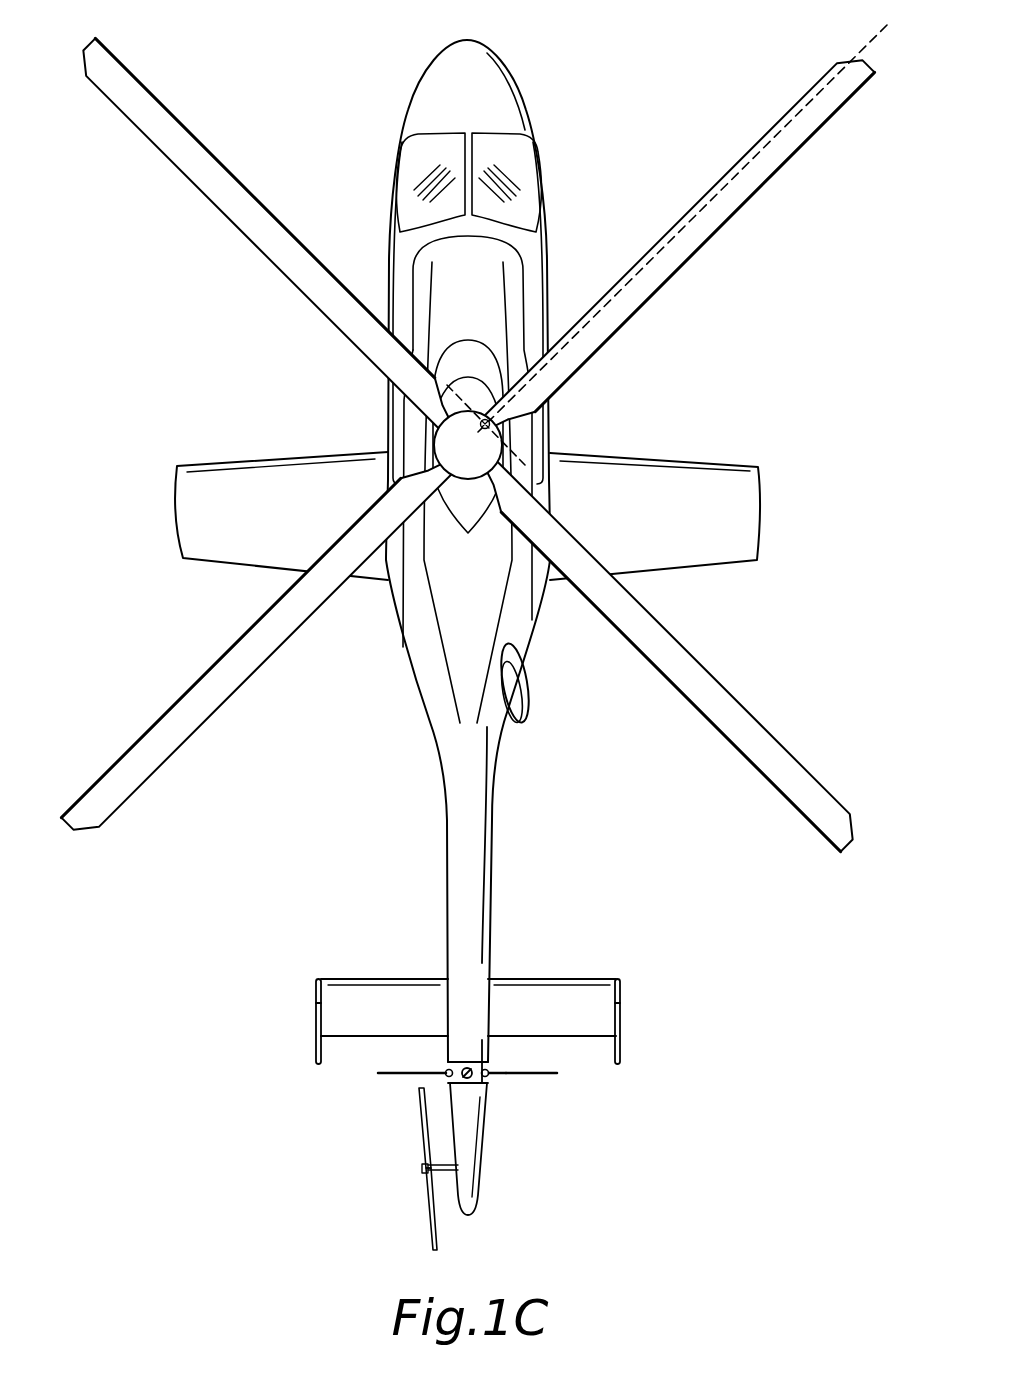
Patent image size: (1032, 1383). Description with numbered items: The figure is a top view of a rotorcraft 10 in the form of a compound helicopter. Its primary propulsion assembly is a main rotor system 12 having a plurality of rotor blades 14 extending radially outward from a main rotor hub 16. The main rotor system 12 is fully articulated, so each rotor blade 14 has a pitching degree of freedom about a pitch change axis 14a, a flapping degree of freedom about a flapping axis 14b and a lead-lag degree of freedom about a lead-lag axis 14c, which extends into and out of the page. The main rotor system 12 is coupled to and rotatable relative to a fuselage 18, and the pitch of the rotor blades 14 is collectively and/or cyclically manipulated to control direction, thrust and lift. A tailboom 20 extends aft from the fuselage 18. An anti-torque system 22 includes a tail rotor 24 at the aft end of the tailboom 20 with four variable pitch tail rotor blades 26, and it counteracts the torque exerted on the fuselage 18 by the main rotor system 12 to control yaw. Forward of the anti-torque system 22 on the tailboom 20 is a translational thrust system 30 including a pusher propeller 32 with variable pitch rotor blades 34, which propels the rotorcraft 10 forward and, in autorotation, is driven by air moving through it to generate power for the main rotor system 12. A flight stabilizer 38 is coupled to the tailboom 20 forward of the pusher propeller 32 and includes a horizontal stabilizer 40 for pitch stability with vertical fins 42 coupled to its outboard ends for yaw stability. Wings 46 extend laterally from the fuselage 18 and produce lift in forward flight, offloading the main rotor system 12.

The rotorcraft 10 is at (296, 108).
The main rotor system 12 is at (467, 444).
The rotor blades 14 is at (783, 155).
The pitch change axis 14a is at (868, 46).
The flapping axis 14b is at (530, 457).
The lead-lag axis 14c is at (490, 425).
The main rotor hub 16 is at (440, 437).
The fuselage 18 is at (413, 665).
The tailboom 20 is at (448, 790).
The anti-torque system 22 is at (428, 1231).
The tail rotor 24 is at (422, 1162).
The tail rotor blades 26 is at (420, 1125).
The translational thrust system 30 is at (543, 1082).
The pusher propeller 32 is at (500, 1078).
The rotor blades 34 is at (385, 1074).
The flight stabilizer 38 is at (522, 974).
The horizontal stabilizer 40 is at (573, 990).
The vertical fins 42 is at (621, 1050).
The wings 46 is at (690, 478).